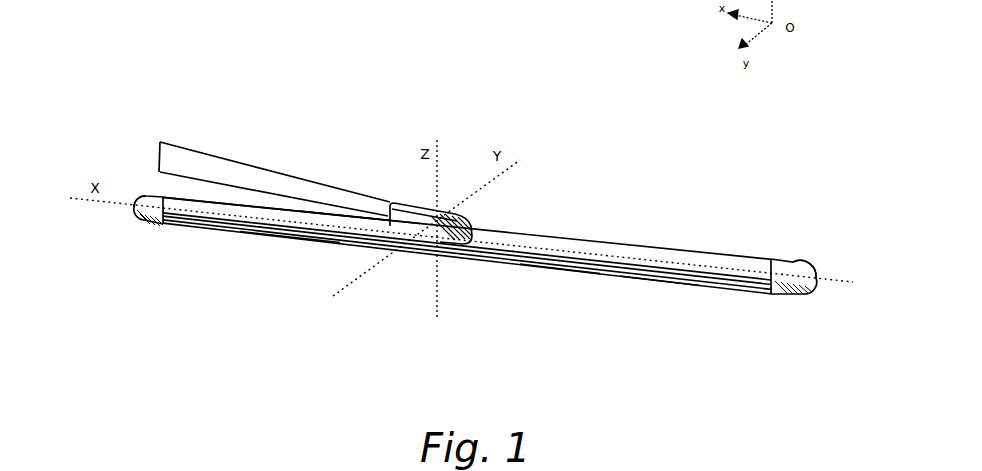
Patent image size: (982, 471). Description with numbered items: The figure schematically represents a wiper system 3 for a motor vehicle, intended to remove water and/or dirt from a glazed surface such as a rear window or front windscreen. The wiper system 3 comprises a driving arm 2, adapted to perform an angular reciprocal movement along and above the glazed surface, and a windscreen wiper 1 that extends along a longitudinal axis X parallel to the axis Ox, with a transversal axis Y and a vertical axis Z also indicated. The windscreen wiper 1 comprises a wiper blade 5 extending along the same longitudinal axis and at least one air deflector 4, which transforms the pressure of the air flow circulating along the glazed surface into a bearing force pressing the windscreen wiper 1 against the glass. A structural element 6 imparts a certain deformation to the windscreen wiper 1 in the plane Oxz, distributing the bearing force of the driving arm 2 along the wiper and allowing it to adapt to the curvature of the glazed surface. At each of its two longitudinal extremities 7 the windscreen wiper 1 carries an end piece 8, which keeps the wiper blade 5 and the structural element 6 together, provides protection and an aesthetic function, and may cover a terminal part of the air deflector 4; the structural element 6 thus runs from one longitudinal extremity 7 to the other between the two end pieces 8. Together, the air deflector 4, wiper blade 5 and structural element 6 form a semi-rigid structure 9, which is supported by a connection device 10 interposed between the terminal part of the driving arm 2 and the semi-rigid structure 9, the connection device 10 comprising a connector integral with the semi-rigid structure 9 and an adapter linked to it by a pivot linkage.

The windscreen wiper 1 is at (585, 238).
The driving arm 2 is at (177, 142).
The wiper system 3 is at (378, 140).
The air deflector 4 is at (188, 198).
The wiper blade 5 is at (290, 237).
The structural element 6 is at (557, 264).
The longitudinal extremity 7 is at (146, 228).
The end piece 8 is at (148, 196).
The semi-rigid structure 9 is at (643, 295).
The connection device 10 is at (455, 268).